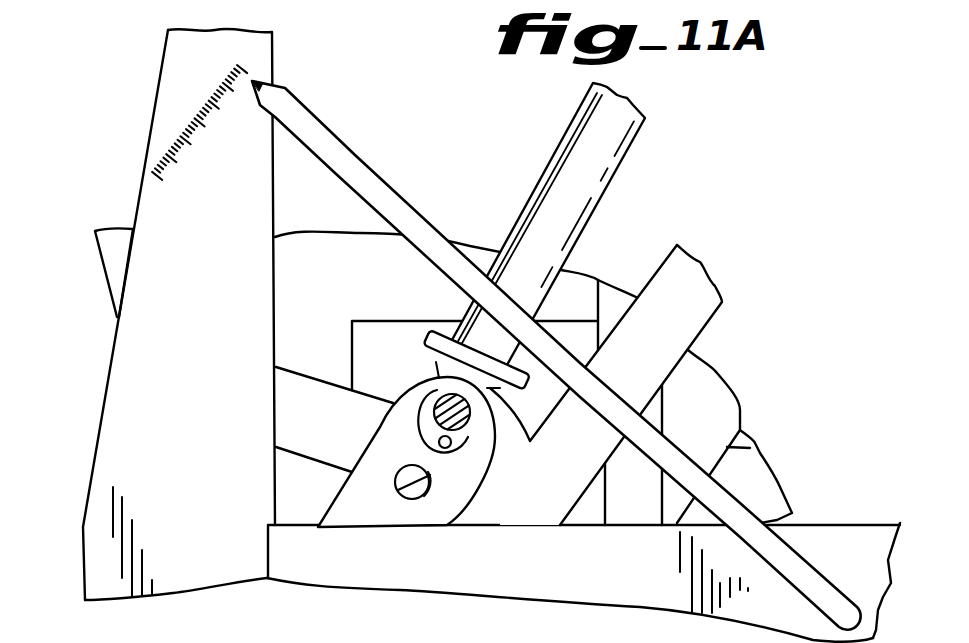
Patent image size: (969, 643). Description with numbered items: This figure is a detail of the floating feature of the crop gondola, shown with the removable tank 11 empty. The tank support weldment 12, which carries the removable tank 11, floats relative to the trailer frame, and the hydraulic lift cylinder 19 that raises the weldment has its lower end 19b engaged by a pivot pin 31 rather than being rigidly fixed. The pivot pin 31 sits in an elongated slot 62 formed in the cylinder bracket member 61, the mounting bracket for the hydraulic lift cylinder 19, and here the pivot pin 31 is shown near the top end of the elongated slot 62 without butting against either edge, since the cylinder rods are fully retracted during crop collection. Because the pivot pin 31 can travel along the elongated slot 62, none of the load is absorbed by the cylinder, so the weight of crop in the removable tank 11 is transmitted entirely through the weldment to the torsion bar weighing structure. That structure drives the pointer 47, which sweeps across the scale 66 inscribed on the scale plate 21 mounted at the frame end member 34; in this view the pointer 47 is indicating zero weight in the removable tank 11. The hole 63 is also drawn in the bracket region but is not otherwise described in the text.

The removable tank 11 is at (360, 292).
The tank support weldment 12 is at (100, 267).
The hydraulic lift cylinder 19 is at (640, 155).
The lower end of hydraulic lift cylinder 19b is at (493, 437).
The scale plate 21 is at (203, 363).
The pivot pin 31 is at (435, 403).
The end member 34 is at (382, 575).
The pointer 47 is at (393, 190).
The cylinder bracket member 61 is at (380, 450).
The elongated slot 62 is at (450, 447).
The hole 63 is at (420, 496).
The scale 66 is at (158, 178).